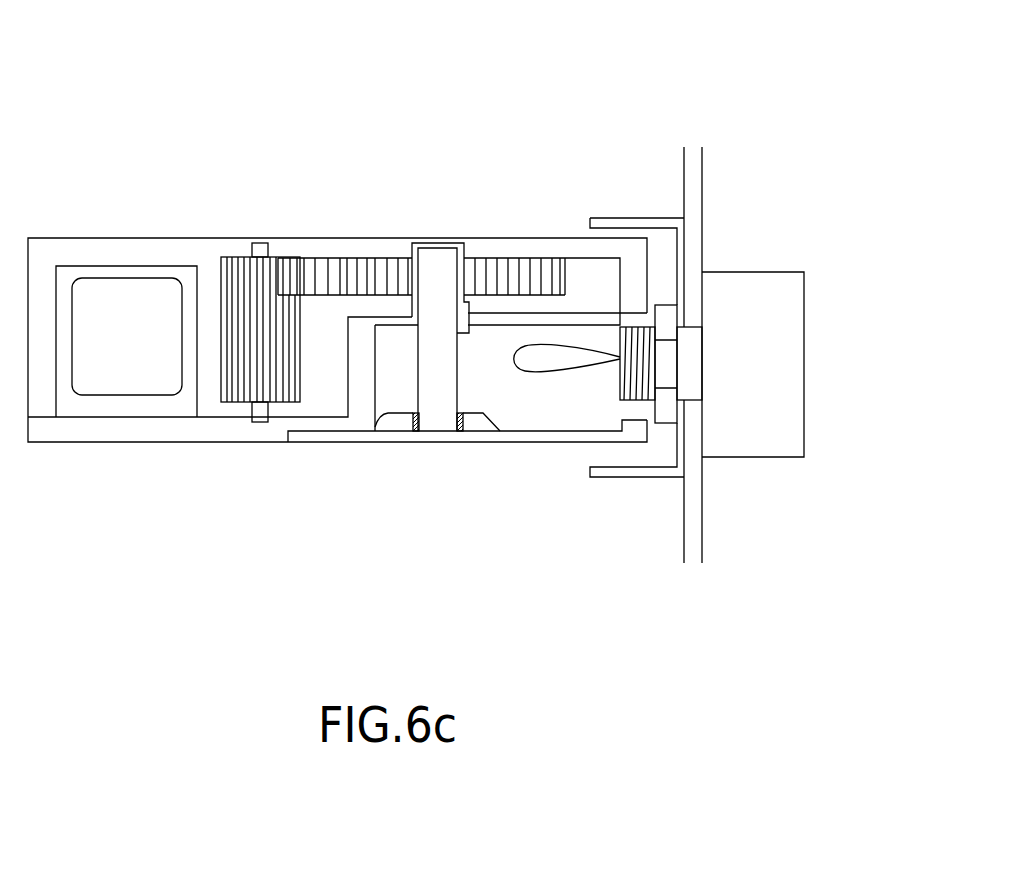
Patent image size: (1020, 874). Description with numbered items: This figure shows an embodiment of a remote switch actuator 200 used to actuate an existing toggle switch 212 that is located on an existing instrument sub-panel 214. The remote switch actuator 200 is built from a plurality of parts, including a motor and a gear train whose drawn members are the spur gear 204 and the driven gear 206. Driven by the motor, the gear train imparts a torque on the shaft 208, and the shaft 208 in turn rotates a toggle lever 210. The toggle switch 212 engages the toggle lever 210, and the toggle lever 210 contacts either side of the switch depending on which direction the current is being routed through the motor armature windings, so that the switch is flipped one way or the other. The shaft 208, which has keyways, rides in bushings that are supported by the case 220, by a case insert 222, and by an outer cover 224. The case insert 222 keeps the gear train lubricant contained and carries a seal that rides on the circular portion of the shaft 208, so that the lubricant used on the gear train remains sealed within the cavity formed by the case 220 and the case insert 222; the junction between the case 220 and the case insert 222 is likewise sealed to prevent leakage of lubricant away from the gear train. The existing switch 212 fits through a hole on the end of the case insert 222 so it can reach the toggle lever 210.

The remote switch actuator 200 is at (103, 378).
The spur gear 204 is at (250, 295).
The driven gear 206 is at (358, 277).
The shaft 208 is at (438, 273).
The toggle lever 210 is at (505, 345).
The toggle switch 212 is at (785, 342).
The instrument sub-panel 214 is at (692, 515).
The case 220 is at (105, 253).
The case insert 222 is at (155, 430).
The outer cover 224 is at (487, 430).